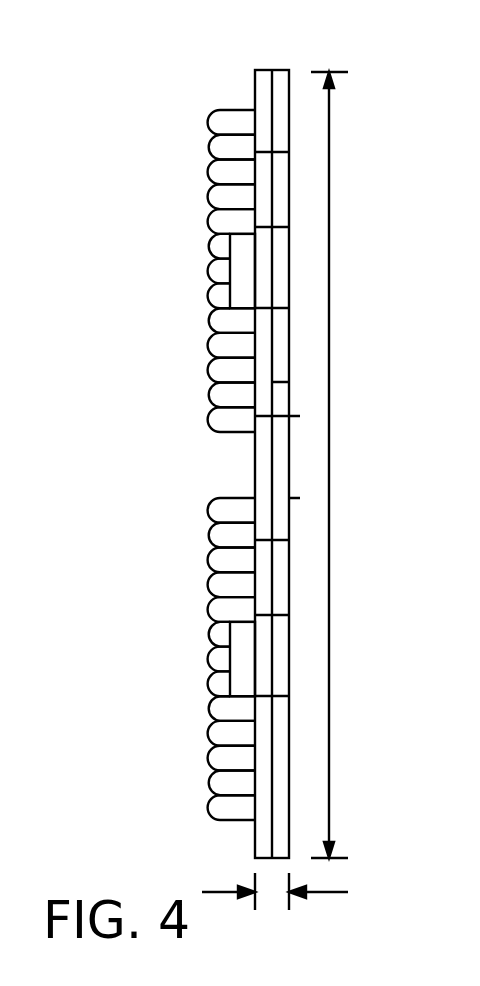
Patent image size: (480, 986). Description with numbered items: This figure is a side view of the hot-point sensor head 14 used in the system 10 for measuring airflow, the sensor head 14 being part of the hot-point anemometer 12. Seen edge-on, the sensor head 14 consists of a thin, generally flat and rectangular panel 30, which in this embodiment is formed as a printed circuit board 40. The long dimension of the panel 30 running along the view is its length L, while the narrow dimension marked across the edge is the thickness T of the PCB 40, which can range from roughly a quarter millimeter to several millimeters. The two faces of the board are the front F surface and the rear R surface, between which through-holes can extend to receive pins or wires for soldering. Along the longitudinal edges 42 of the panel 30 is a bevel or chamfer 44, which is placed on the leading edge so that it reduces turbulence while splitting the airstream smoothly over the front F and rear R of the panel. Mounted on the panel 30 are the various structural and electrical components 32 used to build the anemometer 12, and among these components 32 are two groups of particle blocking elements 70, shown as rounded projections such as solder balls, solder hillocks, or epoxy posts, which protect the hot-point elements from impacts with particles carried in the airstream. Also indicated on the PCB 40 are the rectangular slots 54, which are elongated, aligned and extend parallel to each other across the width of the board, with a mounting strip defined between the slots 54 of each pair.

The system 10 is at (406, 171).
The hot-point anemometer 12 is at (352, 207).
The hot-point sensor head 14 is at (244, 457).
The panel 30 is at (316, 429).
The printed circuit board 40 is at (289, 416).
The components 32 is at (279, 445).
The longitudinal edges 42 is at (262, 80).
The chamfer 44 is at (280, 72).
The rectangular slots 54 is at (293, 681).
The particle blocking elements 70 is at (287, 445).
The length L is at (330, 333).
The rear surface R is at (300, 498).
The front surface F is at (255, 447).
The thickness T is at (270, 897).